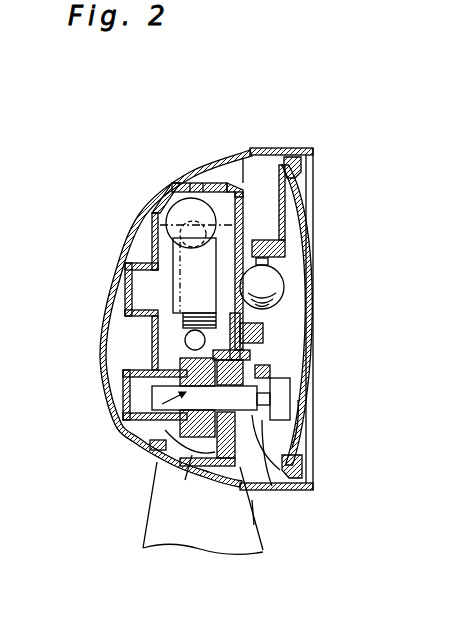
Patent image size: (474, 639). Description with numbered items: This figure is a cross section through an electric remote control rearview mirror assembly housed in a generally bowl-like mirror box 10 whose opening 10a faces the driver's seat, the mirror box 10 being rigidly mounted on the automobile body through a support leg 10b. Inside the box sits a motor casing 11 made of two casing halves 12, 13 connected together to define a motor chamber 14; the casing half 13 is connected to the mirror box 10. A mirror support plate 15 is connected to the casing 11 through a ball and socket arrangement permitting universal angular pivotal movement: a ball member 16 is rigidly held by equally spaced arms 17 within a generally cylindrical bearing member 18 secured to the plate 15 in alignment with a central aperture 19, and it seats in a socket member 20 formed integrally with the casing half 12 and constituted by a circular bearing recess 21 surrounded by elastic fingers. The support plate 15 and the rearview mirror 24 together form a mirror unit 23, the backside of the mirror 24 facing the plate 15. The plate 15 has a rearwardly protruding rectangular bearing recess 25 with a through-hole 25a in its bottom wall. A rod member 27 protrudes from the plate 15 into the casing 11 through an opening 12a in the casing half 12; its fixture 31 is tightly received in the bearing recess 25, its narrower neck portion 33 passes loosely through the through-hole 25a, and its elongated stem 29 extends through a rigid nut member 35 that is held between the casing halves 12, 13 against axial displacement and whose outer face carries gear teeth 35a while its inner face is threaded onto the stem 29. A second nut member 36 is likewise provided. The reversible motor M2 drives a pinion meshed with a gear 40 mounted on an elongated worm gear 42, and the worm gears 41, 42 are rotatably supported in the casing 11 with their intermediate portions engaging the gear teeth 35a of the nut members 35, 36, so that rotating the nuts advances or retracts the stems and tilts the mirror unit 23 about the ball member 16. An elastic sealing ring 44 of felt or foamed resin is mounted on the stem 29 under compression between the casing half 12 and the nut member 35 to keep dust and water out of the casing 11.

The mirror box 10 is at (306, 150).
The opening 10a is at (318, 162).
The support leg 10b is at (232, 539).
The motor casing 11 is at (126, 294).
The casing half 12 is at (254, 525).
The opening 12a is at (185, 480).
The casing half 13 is at (152, 396).
The motor chamber 14 is at (165, 182).
The mirror support plate 15 is at (272, 150).
The ball member 16 is at (284, 278).
The arms 17 is at (292, 250).
The bearing member 18 is at (244, 166).
The central aperture 19 is at (286, 301).
The socket member 20 is at (246, 355).
The circular bearing recess 21 is at (224, 178).
The mirror unit 23 is at (320, 167).
The rearview mirror 24 is at (308, 192).
The bearing recess 25 is at (300, 452).
The through-hole 25a is at (263, 440).
The rod member 27 is at (182, 420).
The stem 29 is at (125, 381).
The fixture 31 is at (290, 383).
The neck portion 33 is at (292, 408).
The nut member 35 is at (190, 443).
The gear teeth 35a is at (175, 455).
The nut member 36 is at (154, 324).
The gear 40 is at (165, 205).
The worm gear 41 is at (185, 341).
The worm gear 42 is at (170, 222).
The elastic sealing ring 44 is at (262, 371).
The electric reversible motor M2 is at (173, 256).